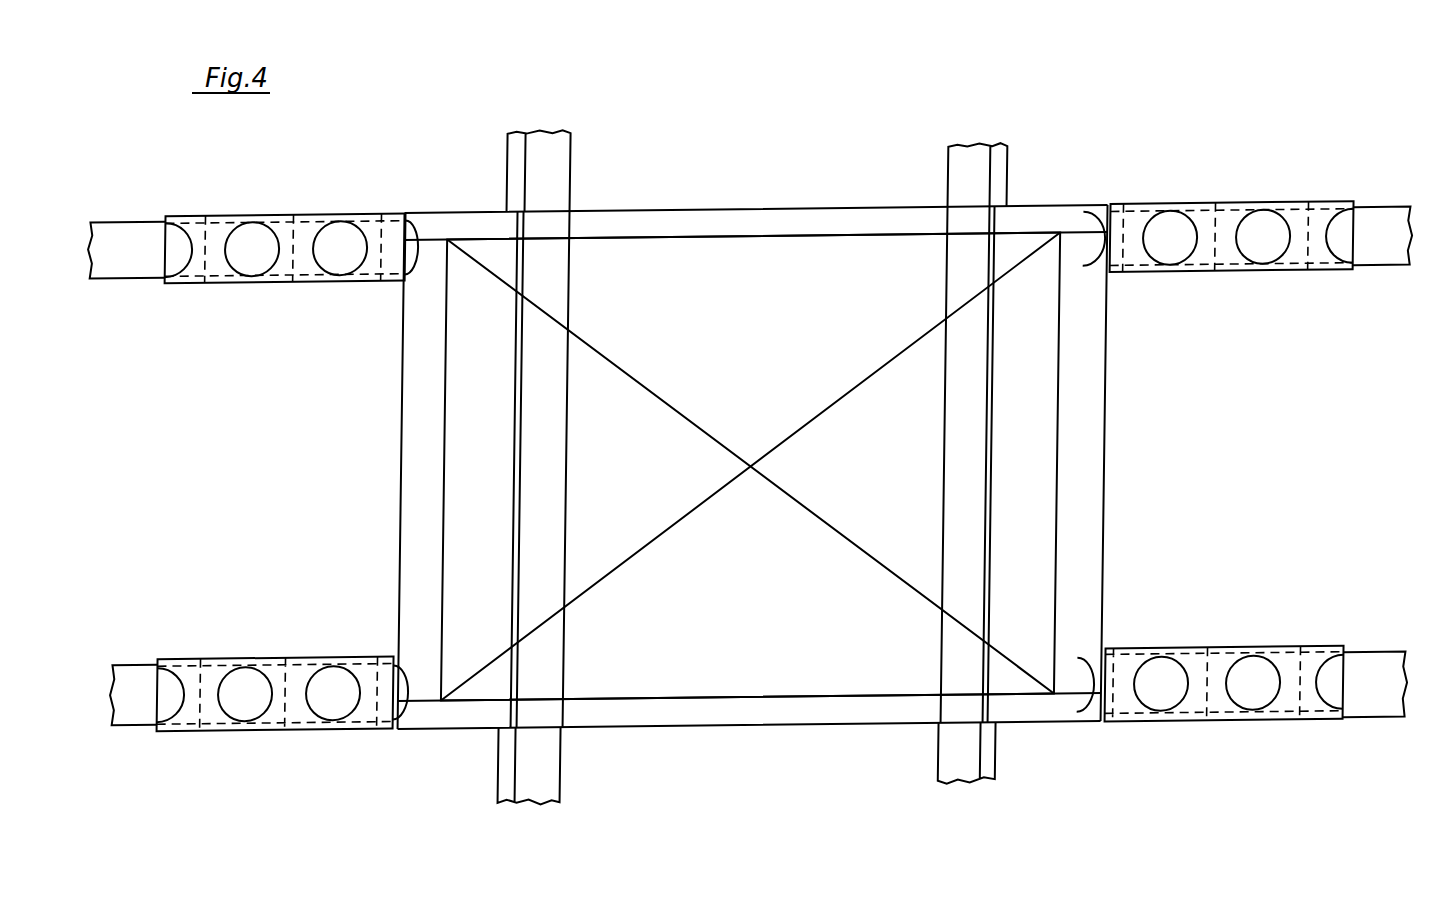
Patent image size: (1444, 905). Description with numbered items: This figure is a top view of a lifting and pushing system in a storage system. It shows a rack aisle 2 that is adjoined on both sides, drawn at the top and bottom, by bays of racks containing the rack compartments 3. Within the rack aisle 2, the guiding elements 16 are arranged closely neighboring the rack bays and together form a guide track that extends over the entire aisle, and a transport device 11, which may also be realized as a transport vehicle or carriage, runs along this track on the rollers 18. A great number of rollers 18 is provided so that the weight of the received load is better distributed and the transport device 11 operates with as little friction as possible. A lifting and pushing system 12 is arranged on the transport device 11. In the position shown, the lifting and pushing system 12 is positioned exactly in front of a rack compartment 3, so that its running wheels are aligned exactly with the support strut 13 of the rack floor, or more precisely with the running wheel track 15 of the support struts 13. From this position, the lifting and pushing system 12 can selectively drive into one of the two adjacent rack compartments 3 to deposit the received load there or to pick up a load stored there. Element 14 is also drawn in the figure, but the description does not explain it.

The rack aisle 2 is at (1241, 449).
The rack compartment 3 is at (787, 156).
The transport device 11 is at (1136, 213).
The lifting and pushing system 12 is at (1067, 225).
The support strut 13 is at (478, 791).
The upper guide block 14 is at (513, 153).
The running wheel track 15 is at (550, 177).
The guiding element 16 is at (1365, 695).
The roller 18 is at (1257, 677).